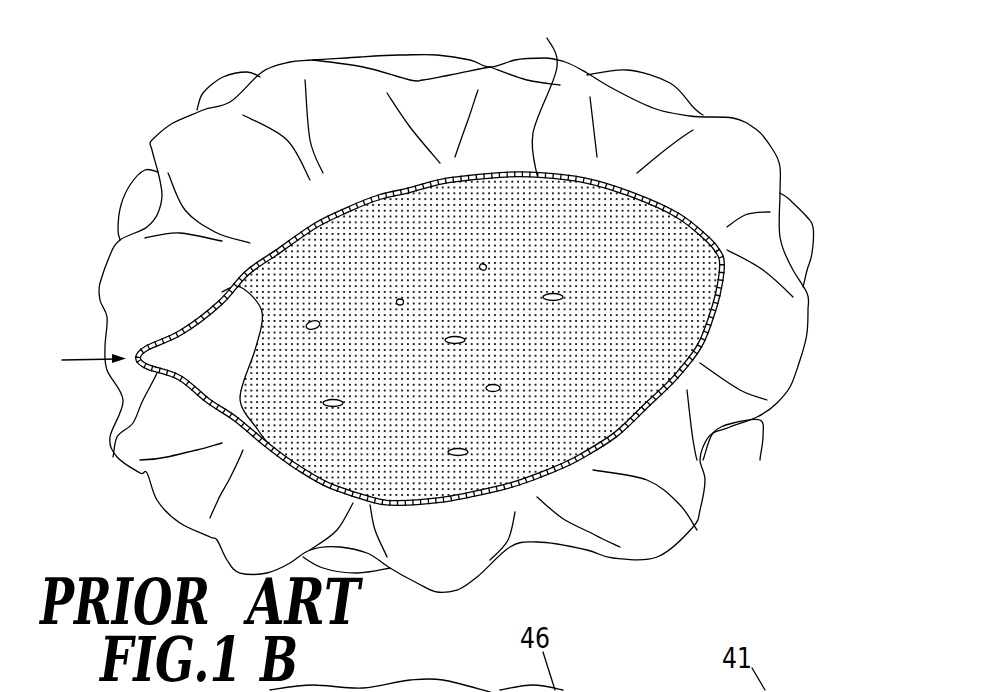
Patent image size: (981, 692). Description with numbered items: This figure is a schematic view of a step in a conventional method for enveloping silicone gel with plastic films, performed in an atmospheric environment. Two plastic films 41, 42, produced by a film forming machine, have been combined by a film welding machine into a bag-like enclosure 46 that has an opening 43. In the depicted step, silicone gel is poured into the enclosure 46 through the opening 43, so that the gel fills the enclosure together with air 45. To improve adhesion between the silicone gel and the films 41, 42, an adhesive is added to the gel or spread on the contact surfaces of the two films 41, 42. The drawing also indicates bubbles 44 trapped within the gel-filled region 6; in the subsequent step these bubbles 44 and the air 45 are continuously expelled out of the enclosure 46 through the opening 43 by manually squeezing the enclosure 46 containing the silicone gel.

The filter pad 6 is at (680, 323).
The plastic film 41 is at (740, 140).
The plastic film 42 is at (797, 230).
The opening 43 is at (133, 347).
The bubbles 44 is at (497, 390).
The air 45 is at (123, 400).
The enclosure 46 is at (539, 91).